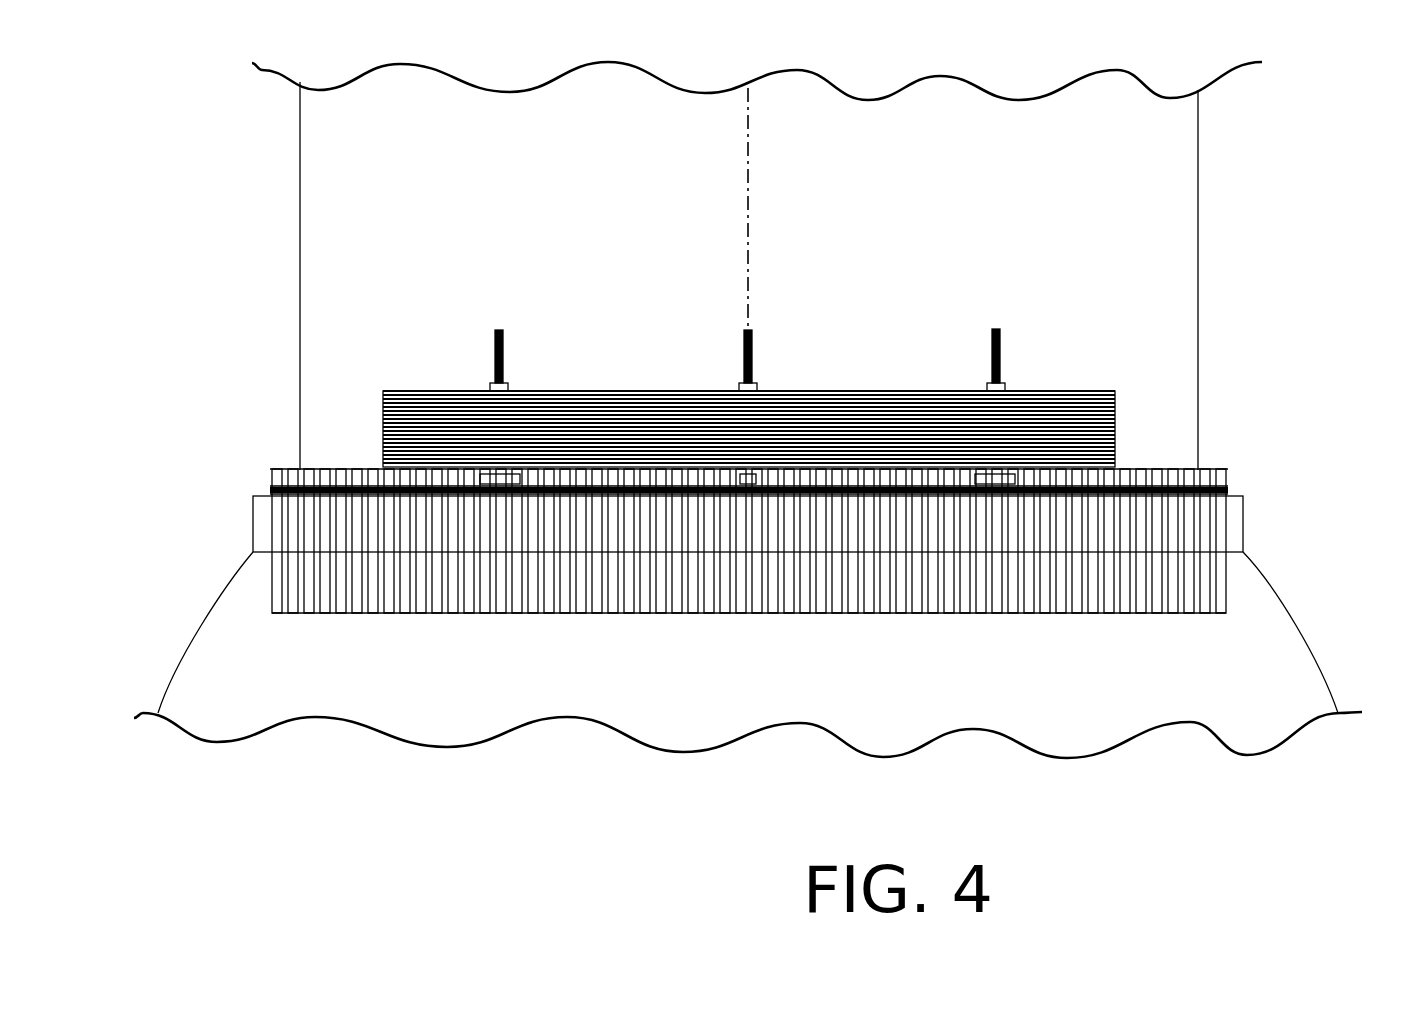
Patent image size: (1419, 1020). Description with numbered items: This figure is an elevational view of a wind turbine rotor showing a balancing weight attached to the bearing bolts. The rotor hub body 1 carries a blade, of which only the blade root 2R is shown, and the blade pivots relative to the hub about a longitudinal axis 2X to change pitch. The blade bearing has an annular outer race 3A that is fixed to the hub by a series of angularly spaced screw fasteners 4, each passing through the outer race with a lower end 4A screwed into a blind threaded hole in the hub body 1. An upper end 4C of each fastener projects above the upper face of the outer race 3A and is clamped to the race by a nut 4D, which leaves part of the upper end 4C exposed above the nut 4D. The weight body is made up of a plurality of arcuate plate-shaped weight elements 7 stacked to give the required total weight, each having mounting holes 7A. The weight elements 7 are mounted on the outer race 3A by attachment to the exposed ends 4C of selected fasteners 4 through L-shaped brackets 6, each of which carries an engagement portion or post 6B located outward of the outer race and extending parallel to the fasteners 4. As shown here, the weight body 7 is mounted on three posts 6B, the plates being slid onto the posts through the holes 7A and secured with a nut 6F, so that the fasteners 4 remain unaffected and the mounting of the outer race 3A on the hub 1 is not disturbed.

The rotor hub body 1 is at (1260, 683).
The blade root 2R is at (380, 205).
The longitudinal axis of the blade 2X is at (752, 163).
The annular outer race 3A is at (257, 522).
The screw fasteners 4 is at (600, 605).
The end of the fastener 4A is at (872, 608).
The upper end of the fastener 4C is at (1128, 472).
The nut 4D is at (878, 490).
The L-shaped brackets 6 is at (1000, 330).
The engagement portion or post 6B is at (750, 330).
The nut 6F is at (752, 387).
The weight elements 7 is at (703, 437).
The mounting holes 7A is at (432, 400).